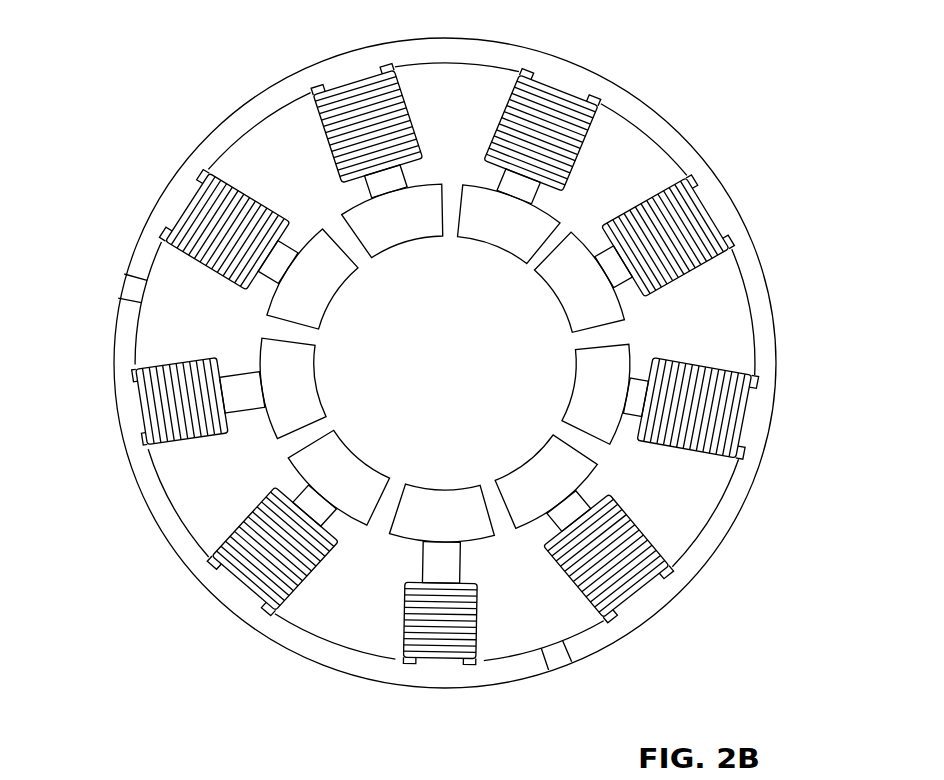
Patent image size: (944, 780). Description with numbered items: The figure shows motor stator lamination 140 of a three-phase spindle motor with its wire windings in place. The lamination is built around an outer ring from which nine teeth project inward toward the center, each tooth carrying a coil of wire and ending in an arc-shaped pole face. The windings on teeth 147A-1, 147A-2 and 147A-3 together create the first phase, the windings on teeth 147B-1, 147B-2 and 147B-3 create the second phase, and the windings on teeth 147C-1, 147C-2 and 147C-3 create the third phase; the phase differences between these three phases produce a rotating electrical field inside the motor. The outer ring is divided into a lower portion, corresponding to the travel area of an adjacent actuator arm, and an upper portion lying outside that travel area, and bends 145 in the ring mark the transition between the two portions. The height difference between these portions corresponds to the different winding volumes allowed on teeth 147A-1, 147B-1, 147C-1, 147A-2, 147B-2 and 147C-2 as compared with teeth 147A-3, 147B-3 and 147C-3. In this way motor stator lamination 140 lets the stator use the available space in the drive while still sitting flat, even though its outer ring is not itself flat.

The motor stator lamination 140 is at (181, 86).
The bends 145 is at (121, 287).
The tooth 147A-1 is at (183, 197).
The tooth 147A-2 is at (700, 212).
The tooth 147A-3 is at (443, 664).
The tooth 147B-1 is at (355, 73).
The tooth 147B-2 is at (748, 415).
The tooth 147B-3 is at (247, 593).
The tooth 147C-1 is at (572, 80).
The tooth 147C-2 is at (660, 605).
The tooth 147C-3 is at (138, 406).